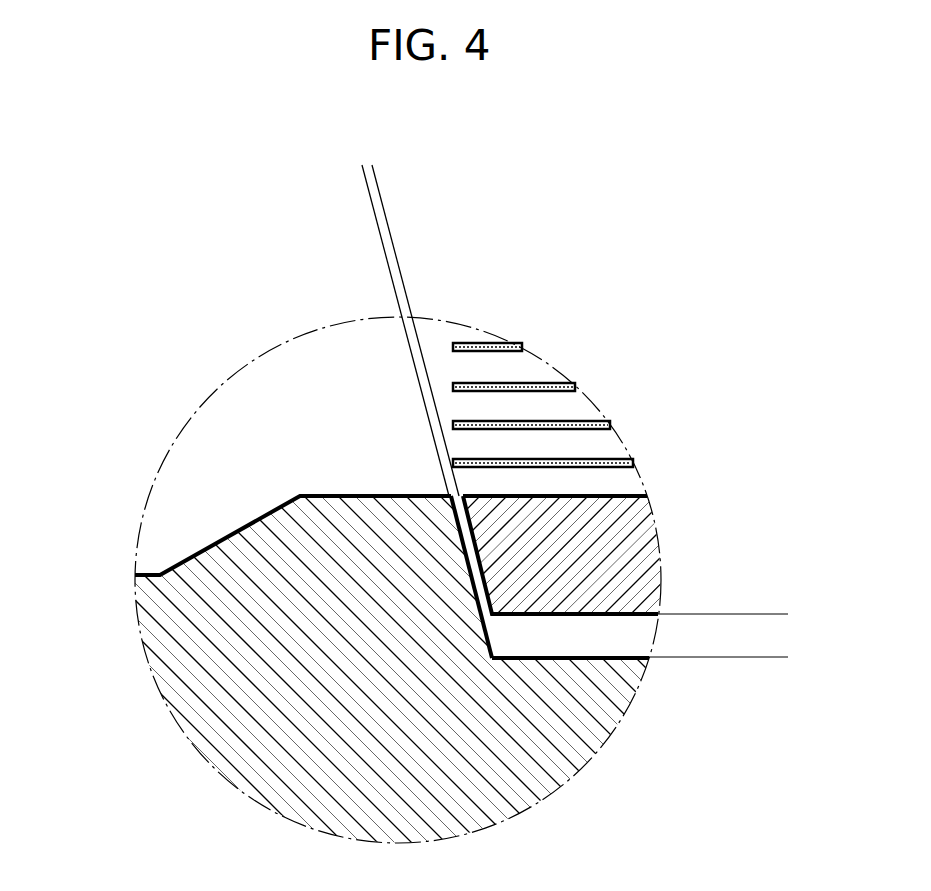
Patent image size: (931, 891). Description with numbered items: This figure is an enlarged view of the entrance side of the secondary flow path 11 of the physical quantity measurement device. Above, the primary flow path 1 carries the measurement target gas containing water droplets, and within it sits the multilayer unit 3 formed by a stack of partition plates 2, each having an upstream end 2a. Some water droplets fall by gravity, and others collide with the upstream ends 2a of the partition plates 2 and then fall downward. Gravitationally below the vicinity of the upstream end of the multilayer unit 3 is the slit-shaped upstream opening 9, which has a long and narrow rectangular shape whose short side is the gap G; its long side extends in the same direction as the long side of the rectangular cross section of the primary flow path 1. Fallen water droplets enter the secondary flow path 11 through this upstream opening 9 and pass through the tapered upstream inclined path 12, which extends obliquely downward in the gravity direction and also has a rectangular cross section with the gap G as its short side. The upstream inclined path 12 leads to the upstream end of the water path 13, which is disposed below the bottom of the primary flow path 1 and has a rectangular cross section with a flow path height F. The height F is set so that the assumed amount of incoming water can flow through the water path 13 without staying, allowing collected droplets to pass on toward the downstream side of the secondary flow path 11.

The primary flow path 1 is at (467, 368).
The partition plate 2 is at (605, 458).
The upstream end 2a is at (453, 460).
The multilayer unit 3 is at (488, 368).
The upstream opening 9 is at (450, 494).
The secondary flow path 11 is at (532, 633).
The upstream inclined path 12 is at (473, 562).
The water path 13 is at (607, 643).
The height F is at (779, 575).
The gap G is at (412, 165).